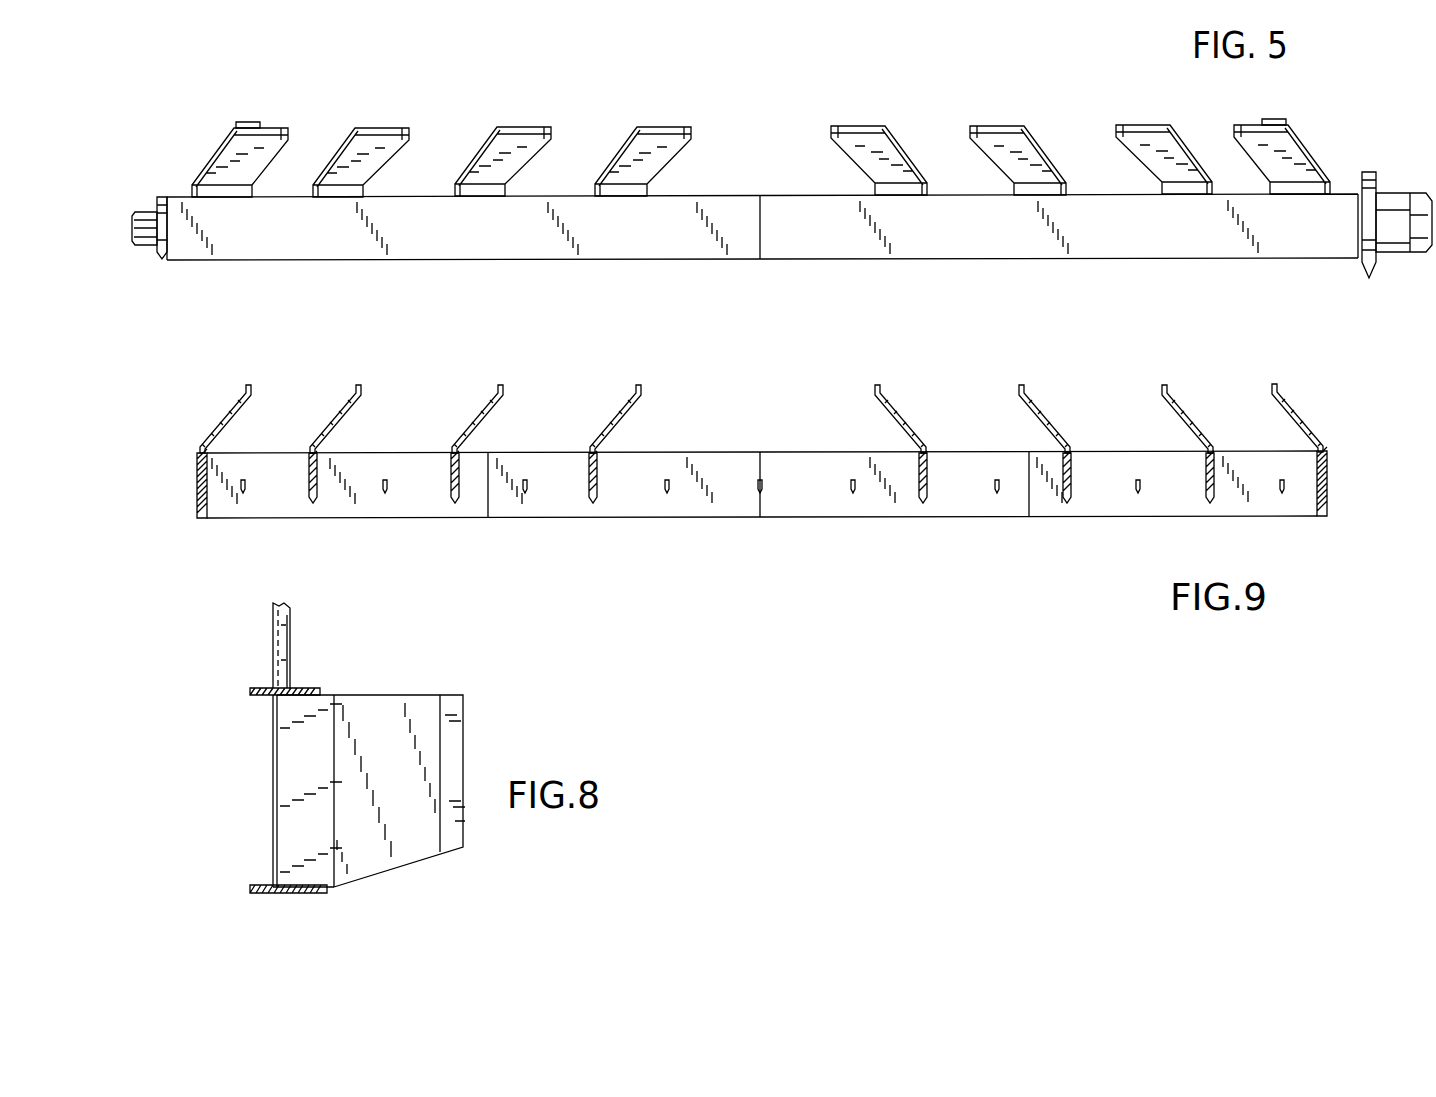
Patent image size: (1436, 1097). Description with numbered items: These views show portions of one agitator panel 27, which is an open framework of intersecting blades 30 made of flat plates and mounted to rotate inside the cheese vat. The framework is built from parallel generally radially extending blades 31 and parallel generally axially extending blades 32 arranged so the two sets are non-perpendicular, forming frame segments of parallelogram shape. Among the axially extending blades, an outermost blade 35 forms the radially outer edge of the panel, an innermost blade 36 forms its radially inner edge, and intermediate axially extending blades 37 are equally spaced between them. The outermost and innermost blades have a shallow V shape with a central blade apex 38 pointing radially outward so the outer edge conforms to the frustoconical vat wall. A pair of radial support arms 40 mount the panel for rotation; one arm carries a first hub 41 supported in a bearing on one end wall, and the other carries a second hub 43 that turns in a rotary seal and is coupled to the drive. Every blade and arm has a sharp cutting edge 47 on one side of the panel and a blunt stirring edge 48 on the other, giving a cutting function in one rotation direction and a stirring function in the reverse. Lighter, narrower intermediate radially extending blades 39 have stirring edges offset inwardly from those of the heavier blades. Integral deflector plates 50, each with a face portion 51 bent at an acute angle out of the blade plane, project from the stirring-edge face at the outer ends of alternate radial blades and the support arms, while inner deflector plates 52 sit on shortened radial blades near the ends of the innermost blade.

In FIG. 5, the agitator panel 27 is at (925, 167).
In FIG. 8, the intersecting blades 30 is at (293, 773).
In FIG. 9, the radially extending blades 31 is at (310, 480).
In FIG. 9, the axially extending blades 32 is at (362, 472).
In FIG. 9, the outermost blade 35 is at (740, 493).
In FIG. 8, the outermost blade 35 is at (318, 888).
In FIG. 5, the innermost blade 36 is at (692, 233).
In FIG. 8, the intermediate axially extending blades 37 is at (318, 690).
In FIG. 5, the central blade apex 38 is at (762, 223).
In FIG. 9, the central blade apex 38 is at (762, 460).
In FIG. 9, the intermediate radially extending blades 39 is at (388, 487).
In FIG. 8, the intermediate radially extending blades 39 is at (287, 648).
In FIG. 5, the radial support arms 40 is at (167, 215).
In FIG. 9, the radial support arms 40 is at (195, 470).
In FIG. 5, the first hub 41 is at (143, 247).
In FIG. 5, the second hub 43 is at (1390, 230).
In FIG. 5, the cutting edge 47 is at (165, 258).
In FIG. 9, the cutting edge 47 is at (203, 517).
In FIG. 8, the cutting edge 47 is at (273, 737).
In FIG. 5, the stirring edge 48 is at (158, 197).
In FIG. 9, the stirring edge 48 is at (527, 452).
In FIG. 5, the deflector plates 50 is at (212, 170).
In FIG. 9, the deflector plates 50 is at (647, 397).
In FIG. 8, the deflector plates 50 is at (385, 692).
In FIG. 5, the face portion 51 is at (637, 157).
In FIG. 9, the face portion 51 is at (617, 420).
In FIG. 8, the face portion 51 is at (395, 712).
In FIG. 5, the inner deflector plates 52 is at (267, 150).